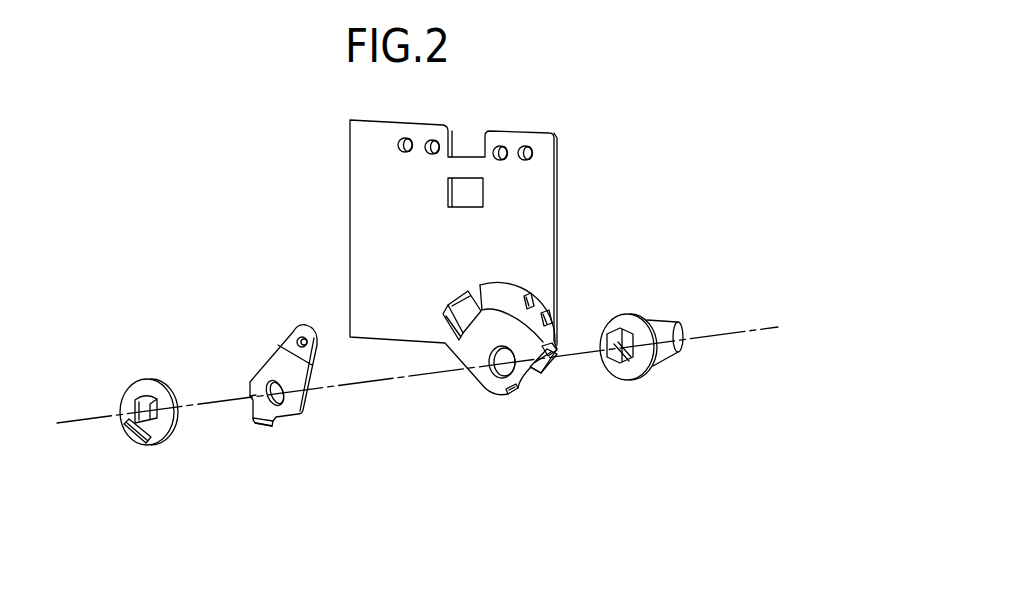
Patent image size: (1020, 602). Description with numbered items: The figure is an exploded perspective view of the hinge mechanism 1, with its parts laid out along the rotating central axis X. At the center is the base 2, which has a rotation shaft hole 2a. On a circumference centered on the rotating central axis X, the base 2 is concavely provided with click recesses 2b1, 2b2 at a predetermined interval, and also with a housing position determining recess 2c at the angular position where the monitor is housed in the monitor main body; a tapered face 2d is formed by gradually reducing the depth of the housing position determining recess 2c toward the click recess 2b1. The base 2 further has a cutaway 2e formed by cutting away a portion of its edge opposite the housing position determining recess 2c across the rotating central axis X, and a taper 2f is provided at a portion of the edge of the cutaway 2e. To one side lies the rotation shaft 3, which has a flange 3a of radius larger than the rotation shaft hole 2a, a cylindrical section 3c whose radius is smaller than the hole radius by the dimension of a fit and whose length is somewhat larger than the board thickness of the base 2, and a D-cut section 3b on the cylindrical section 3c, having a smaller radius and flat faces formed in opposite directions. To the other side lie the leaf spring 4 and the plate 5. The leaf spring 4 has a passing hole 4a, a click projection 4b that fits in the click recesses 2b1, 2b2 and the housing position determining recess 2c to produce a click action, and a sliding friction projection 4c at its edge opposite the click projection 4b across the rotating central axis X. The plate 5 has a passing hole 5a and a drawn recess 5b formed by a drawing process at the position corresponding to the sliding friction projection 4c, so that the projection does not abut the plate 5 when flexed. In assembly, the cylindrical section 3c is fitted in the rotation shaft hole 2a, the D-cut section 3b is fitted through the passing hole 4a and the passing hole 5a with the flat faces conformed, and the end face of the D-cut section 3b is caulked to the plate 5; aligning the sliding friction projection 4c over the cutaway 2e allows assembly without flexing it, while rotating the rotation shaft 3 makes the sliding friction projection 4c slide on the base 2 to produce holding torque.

The hinge mechanism 1 is at (472, 476).
The base 2 is at (367, 202).
The rotation shaft hole 2a is at (485, 368).
The click recess 2b1 is at (532, 298).
The click recess 2b2 is at (551, 320).
The housing position determining recess 2c is at (447, 322).
The tapered face 2d is at (460, 302).
The cutaway 2e is at (541, 376).
The taper 2f is at (511, 393).
The rotation shaft 3 is at (645, 372).
The flange 3a is at (646, 362).
The D-cut section 3b is at (606, 358).
The cylindrical section 3c is at (630, 363).
The leaf spring 4 is at (273, 387).
The passing hole 4a is at (270, 382).
The click projection 4b is at (299, 339).
The sliding friction projection 4c is at (275, 425).
The plate 5 is at (139, 417).
The passing hole 5a is at (140, 402).
The drawn recess 5b is at (132, 438).
The rotating central axis X is at (62, 427).